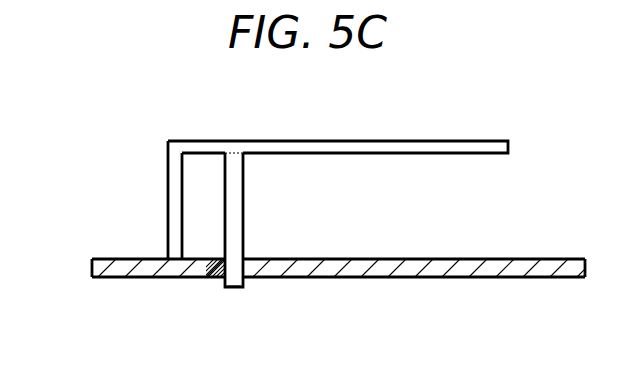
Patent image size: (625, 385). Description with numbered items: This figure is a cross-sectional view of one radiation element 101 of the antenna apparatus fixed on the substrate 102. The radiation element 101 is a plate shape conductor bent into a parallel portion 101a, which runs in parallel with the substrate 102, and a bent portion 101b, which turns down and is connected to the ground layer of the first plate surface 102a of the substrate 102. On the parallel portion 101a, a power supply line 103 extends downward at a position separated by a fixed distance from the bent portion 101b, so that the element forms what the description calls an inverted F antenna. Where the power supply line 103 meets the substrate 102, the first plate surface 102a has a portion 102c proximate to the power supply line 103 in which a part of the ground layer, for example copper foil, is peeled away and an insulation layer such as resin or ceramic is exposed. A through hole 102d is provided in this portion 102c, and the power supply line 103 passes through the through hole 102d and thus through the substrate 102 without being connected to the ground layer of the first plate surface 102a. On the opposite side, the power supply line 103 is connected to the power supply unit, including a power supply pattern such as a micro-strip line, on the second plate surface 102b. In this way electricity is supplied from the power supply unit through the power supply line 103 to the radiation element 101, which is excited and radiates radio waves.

The radiation element 101 is at (300, 164).
The parallel portion 101a is at (440, 141).
The bent portion 101b is at (167, 227).
The substrate 102 is at (311, 260).
The first plate surface 102a is at (478, 259).
The second plate surface 102b is at (443, 278).
The portion 102c is at (244, 257).
The through hole 102d is at (221, 273).
The power supply line 103 is at (231, 273).